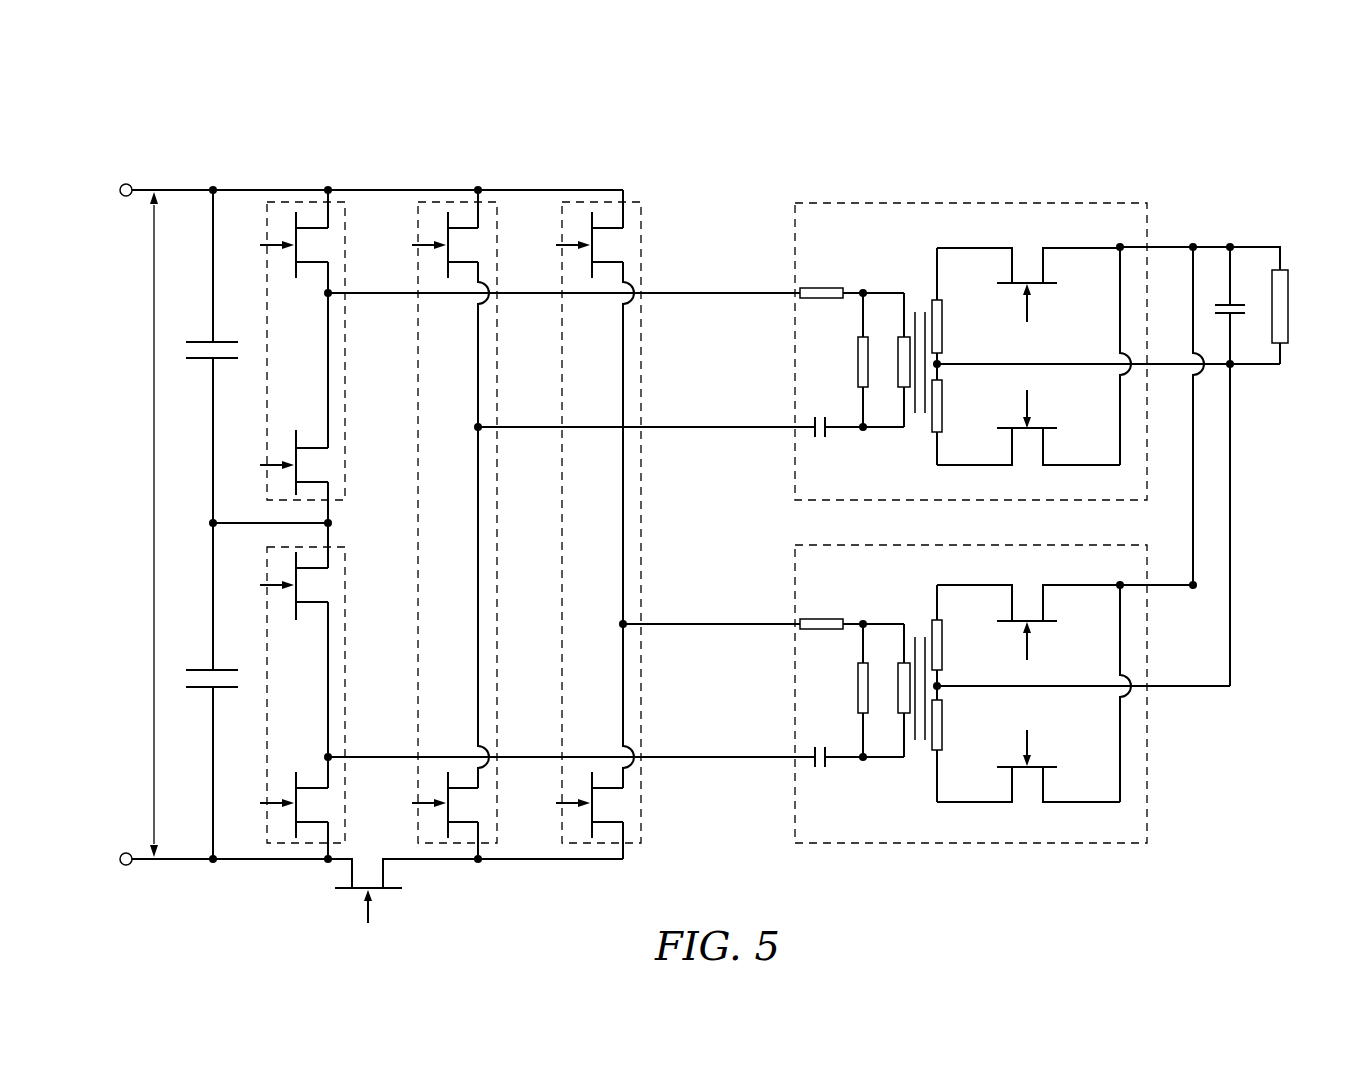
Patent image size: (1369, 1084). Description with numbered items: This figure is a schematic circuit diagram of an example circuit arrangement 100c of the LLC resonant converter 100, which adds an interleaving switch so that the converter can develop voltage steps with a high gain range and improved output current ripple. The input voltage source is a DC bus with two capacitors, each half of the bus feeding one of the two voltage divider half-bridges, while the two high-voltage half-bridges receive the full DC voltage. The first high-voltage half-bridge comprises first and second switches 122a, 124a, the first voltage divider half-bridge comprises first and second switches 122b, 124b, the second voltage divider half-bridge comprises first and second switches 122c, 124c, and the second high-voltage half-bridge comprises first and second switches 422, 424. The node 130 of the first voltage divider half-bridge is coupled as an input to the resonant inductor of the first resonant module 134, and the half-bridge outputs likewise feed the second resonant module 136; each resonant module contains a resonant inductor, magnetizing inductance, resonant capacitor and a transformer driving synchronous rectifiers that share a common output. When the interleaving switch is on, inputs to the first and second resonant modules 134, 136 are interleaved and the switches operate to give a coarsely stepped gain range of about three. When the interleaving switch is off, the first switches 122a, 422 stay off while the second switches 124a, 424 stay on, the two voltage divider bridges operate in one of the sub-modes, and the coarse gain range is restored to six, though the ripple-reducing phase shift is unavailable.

The LLC resonant converter 100 is at (180, 152).
The example circuit arrangement 100c is at (1208, 160).
The first switch of the first half-bridge A1 122a is at (448, 237).
The first switch of the first voltage divider half-bridge B1 122b is at (296, 237).
The first switch of the second voltage divider half-bridge B2 122c is at (296, 592).
The second switch of the first half-bridge A1 124a is at (448, 830).
The second switch of the first voltage divider half-bridge B1 124b is at (296, 478).
The second switch of the second voltage divider half-bridge B2 124c is at (296, 818).
The node of the first voltage divider half-bridge B1 130 is at (330, 293).
The first resonant module 134 is at (868, 242).
The second resonant module 136 is at (888, 803).
The first switch of the second half-bridge A2 422 is at (592, 237).
The second switch of the second half-bridge A2 424 is at (592, 812).